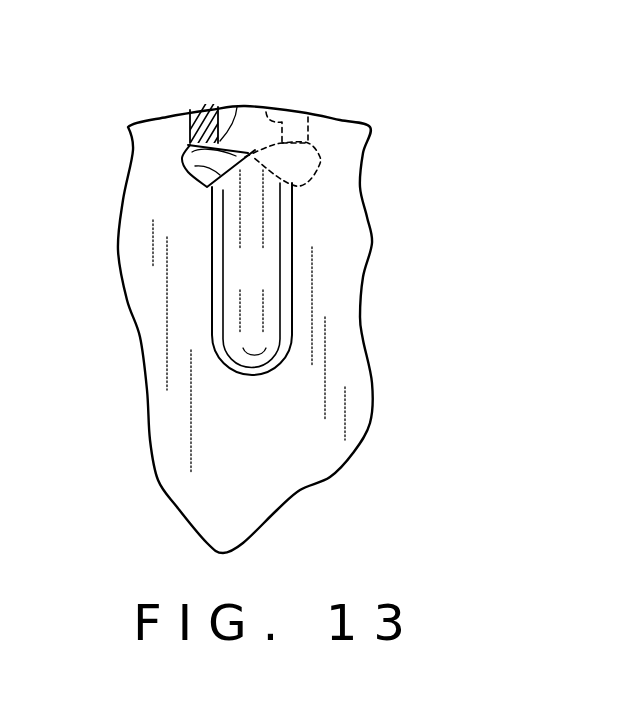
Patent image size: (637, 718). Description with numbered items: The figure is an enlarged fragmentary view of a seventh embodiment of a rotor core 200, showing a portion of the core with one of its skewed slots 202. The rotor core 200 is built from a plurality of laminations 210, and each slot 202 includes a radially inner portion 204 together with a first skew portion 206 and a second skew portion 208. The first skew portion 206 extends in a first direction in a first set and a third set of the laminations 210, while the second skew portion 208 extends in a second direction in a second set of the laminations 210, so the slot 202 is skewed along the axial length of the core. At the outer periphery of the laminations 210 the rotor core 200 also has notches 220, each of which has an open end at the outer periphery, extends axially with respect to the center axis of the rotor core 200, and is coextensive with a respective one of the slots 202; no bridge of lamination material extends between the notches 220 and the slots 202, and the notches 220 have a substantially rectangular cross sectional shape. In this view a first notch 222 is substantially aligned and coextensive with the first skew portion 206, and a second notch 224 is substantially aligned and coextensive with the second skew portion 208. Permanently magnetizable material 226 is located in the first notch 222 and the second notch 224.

The rotor core 200 is at (340, 283).
The slots 202 is at (213, 293).
The radially inner portion 204 is at (269, 281).
The first skew portion 206 is at (181, 166).
The second skew portion 208 is at (305, 187).
The laminations 210 is at (362, 122).
The notches 220 is at (190, 135).
The first notch 222 is at (238, 107).
The second notch 224 is at (266, 112).
The permanently magnetizable material 226 is at (194, 109).